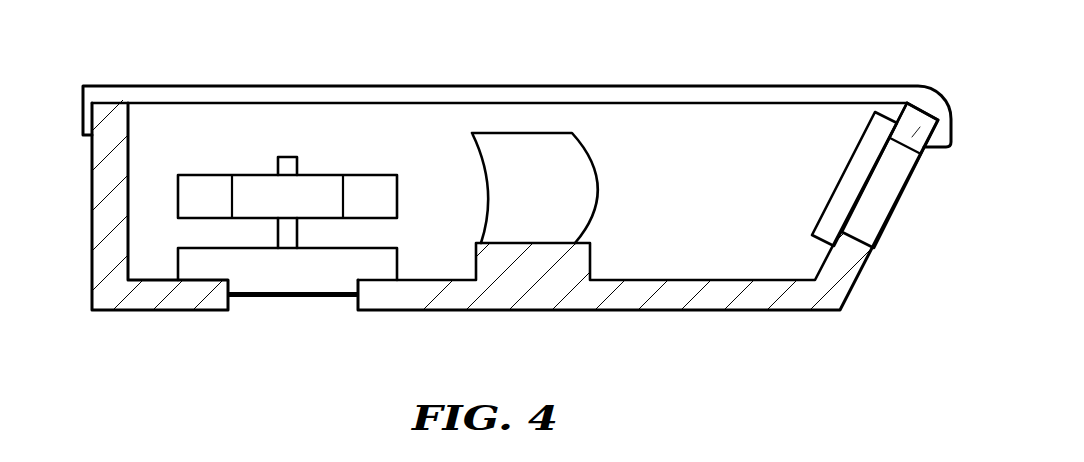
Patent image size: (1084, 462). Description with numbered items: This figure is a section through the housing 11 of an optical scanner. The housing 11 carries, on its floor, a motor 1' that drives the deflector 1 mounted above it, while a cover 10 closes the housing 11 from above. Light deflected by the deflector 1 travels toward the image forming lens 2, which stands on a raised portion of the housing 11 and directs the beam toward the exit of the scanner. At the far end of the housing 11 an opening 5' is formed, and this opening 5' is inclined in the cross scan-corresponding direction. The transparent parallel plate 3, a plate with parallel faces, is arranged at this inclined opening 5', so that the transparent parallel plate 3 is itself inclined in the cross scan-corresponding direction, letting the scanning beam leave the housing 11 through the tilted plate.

The deflector 1 is at (287, 201).
The motor 1' is at (293, 328).
The image forming lens 2 is at (597, 188).
The transparent parallel plate 3 is at (822, 215).
The opening 5' is at (899, 183).
The cover 10 is at (683, 87).
The housing 11 is at (523, 303).